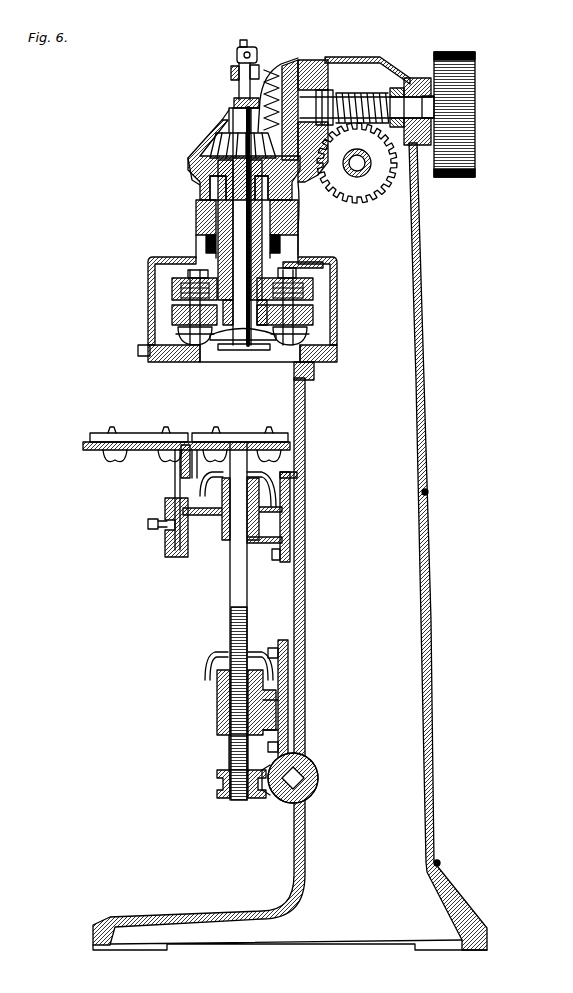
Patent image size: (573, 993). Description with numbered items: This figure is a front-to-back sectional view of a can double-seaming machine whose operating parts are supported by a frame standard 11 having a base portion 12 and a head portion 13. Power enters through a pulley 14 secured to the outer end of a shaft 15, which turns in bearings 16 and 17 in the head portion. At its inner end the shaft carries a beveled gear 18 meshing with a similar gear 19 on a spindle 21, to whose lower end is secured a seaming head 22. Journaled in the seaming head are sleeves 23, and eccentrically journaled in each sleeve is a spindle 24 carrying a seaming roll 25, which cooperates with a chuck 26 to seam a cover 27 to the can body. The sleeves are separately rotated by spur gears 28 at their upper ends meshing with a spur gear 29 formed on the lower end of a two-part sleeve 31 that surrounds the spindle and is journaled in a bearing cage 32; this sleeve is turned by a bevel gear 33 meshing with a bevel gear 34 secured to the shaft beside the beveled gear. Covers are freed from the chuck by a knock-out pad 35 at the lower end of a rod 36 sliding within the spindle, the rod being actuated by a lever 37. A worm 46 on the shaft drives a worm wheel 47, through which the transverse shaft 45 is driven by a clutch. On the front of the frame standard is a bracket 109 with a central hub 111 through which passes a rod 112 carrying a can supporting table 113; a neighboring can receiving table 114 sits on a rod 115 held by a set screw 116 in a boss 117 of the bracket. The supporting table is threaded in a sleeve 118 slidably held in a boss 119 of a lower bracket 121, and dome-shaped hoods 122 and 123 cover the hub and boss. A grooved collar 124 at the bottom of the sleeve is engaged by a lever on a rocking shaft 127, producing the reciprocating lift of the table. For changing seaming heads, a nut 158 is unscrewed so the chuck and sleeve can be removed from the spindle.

The frame standard 11 is at (421, 465).
The base portion 12 is at (138, 918).
The head portion 13 is at (340, 58).
The pulley 14 is at (462, 80).
The shaft 15 is at (392, 103).
The bearing 16 is at (312, 60).
The bearing 17 is at (418, 80).
The beveled gear 18 is at (280, 66).
The bevel gear 19 is at (205, 143).
The spindle 21 is at (238, 190).
The seaming head 22 is at (175, 318).
The sleeve 23 is at (313, 310).
The spindle 24 is at (300, 272).
The seaming roll 25 is at (309, 340).
The chuck 26 is at (234, 343).
The cover 27 is at (266, 350).
The spur gear 28 is at (313, 288).
The spur gear 29 is at (286, 270).
The two-part sleeve 31 is at (228, 265).
The bearing cage 32 is at (212, 233).
The bevel gear 33 is at (196, 160).
The bevel gear 34 is at (289, 62).
The knock-out pad 35 is at (249, 350).
The rod 36 is at (239, 85).
The lever 37 is at (253, 72).
The transverse shaft 45 is at (346, 174).
The worm 46 is at (361, 95).
The worm wheel 47 is at (373, 167).
The bracket 109 is at (288, 566).
The central hub 111 is at (232, 588).
The rod 112 is at (236, 592).
The can supporting table 113 is at (296, 466).
The can receiving table 114 is at (165, 448).
The rod 115 is at (178, 484).
The set screw 116 is at (153, 528).
The boss 117 is at (168, 542).
The sleeve 118 is at (228, 745).
The boss 119 is at (222, 707).
The bracket 121 is at (282, 686).
The dome-shaped hood 122 is at (218, 510).
The dome-shaped hood 123 is at (208, 667).
The grooved collar 124 is at (222, 796).
The shaft 127 is at (317, 790).
The nut 158 is at (185, 342).